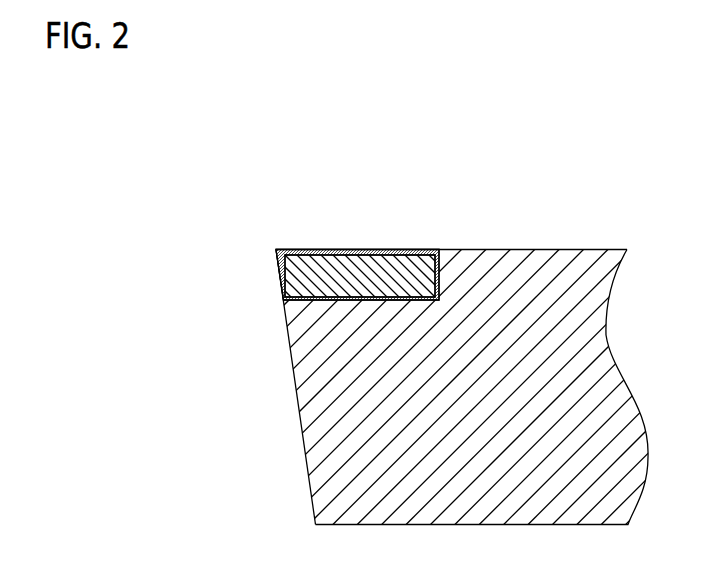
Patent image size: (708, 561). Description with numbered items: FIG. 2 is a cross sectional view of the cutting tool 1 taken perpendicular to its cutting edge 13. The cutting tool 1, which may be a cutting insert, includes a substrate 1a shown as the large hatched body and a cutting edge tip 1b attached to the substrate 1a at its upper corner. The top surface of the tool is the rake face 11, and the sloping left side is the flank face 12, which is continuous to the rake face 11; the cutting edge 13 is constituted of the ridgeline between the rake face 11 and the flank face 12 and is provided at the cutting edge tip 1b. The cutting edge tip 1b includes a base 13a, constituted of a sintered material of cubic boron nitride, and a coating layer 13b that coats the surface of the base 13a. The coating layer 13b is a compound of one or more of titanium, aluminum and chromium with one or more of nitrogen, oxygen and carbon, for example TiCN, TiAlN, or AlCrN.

The cutting tool 1 is at (540, 172).
The substrate 1a is at (496, 258).
The cutting edge tip 1b is at (392, 204).
The rake face 11 is at (557, 250).
The flank face 12 is at (288, 333).
The cutting edge 13 is at (276, 249).
The base 13a is at (424, 250).
The coating layer 13b is at (302, 250).